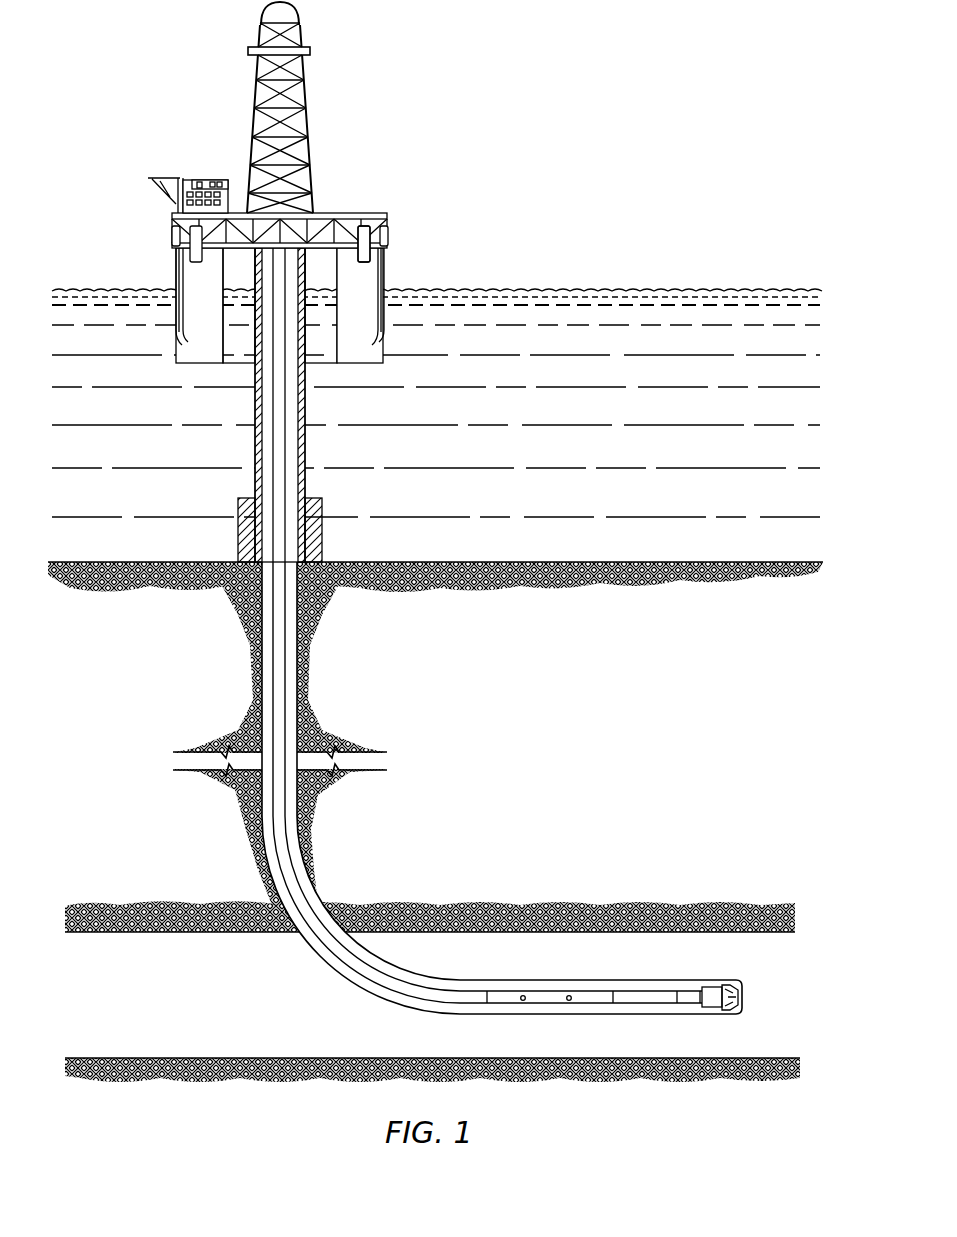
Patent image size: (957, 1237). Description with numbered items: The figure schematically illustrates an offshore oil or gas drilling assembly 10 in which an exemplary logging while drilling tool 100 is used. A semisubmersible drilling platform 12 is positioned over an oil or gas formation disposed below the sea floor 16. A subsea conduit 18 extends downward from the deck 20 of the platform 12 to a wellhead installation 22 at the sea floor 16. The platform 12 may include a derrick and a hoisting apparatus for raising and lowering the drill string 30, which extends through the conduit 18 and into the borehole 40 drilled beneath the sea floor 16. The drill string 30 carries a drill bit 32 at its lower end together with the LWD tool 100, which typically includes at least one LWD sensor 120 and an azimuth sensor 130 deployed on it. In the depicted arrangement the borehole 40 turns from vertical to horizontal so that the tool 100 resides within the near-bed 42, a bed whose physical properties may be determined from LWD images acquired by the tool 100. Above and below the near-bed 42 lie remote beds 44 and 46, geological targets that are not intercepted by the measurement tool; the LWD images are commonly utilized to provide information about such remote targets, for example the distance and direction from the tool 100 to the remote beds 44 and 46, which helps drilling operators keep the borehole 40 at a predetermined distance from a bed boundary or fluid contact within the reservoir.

The offshore oil or gas drilling assembly 10 is at (372, 113).
The semisubmersible drilling platform 12 is at (374, 213).
The sea floor 16 is at (528, 562).
The subsea conduit 18 is at (306, 447).
The deck 20 is at (388, 242).
The wellhead installation 22 is at (320, 499).
The drill string 30 is at (286, 373).
The drill bit 32 is at (731, 984).
The borehole 40 is at (262, 660).
The near-bed 42 is at (195, 1006).
The remote bed 44 is at (181, 904).
The remote bed 46 is at (181, 1101).
The logging while drilling tool 100 is at (512, 654).
The LWD sensor 120 is at (570, 994).
The azimuth sensor 130 is at (524, 994).